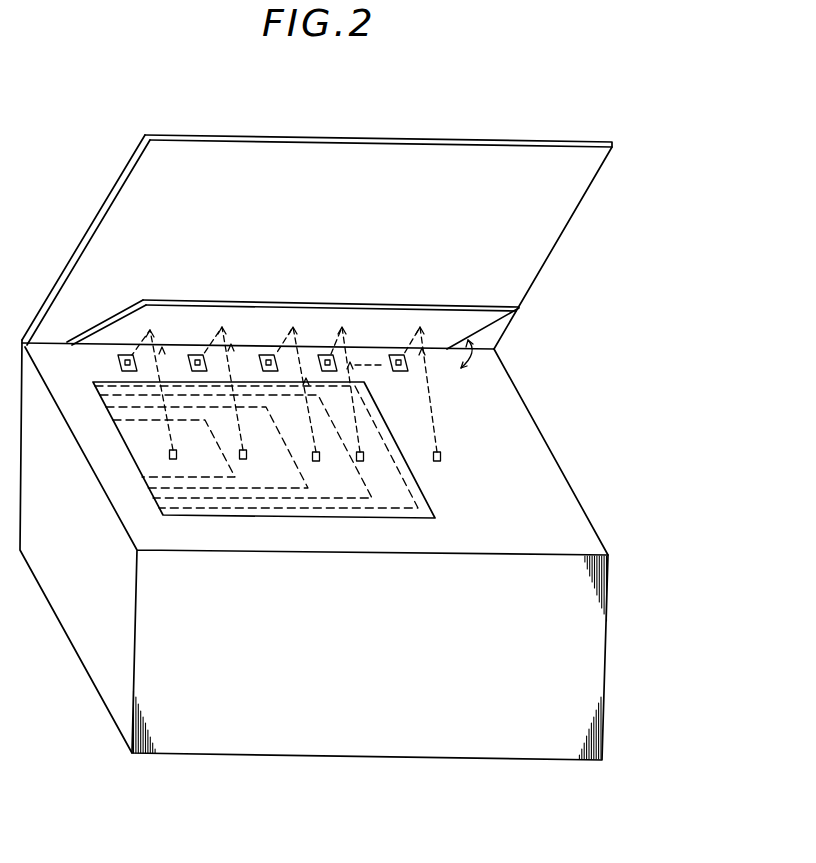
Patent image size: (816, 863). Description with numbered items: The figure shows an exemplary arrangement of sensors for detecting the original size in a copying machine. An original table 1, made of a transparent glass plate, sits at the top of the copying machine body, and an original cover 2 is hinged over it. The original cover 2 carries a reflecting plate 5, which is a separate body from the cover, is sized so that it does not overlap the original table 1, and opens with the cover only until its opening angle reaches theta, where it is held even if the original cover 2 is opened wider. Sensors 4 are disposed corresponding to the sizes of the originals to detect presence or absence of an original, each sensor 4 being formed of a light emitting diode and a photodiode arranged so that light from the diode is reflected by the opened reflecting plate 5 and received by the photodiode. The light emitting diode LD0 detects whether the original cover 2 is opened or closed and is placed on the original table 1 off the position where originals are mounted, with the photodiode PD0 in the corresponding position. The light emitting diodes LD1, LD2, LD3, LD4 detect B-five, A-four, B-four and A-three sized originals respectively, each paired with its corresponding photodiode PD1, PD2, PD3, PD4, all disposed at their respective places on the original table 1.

The original table 1 is at (432, 507).
The original cover 2 is at (404, 158).
The sensors 4 is at (275, 342).
The reflecting plate 5 is at (469, 317).
The photodiode PD0 is at (398, 355).
The photodiode PD1 is at (126, 355).
The photodiode PD2 is at (197, 355).
The photodiode PD3 is at (262, 355).
The photodiode PD4 is at (325, 355).
The light emitting diode LD0 is at (441, 455).
The light emitting diode LD1 is at (170, 459).
The light emitting diode LD2 is at (245, 461).
The light emitting diode LD3 is at (318, 461).
The light emitting diode LD4 is at (362, 461).